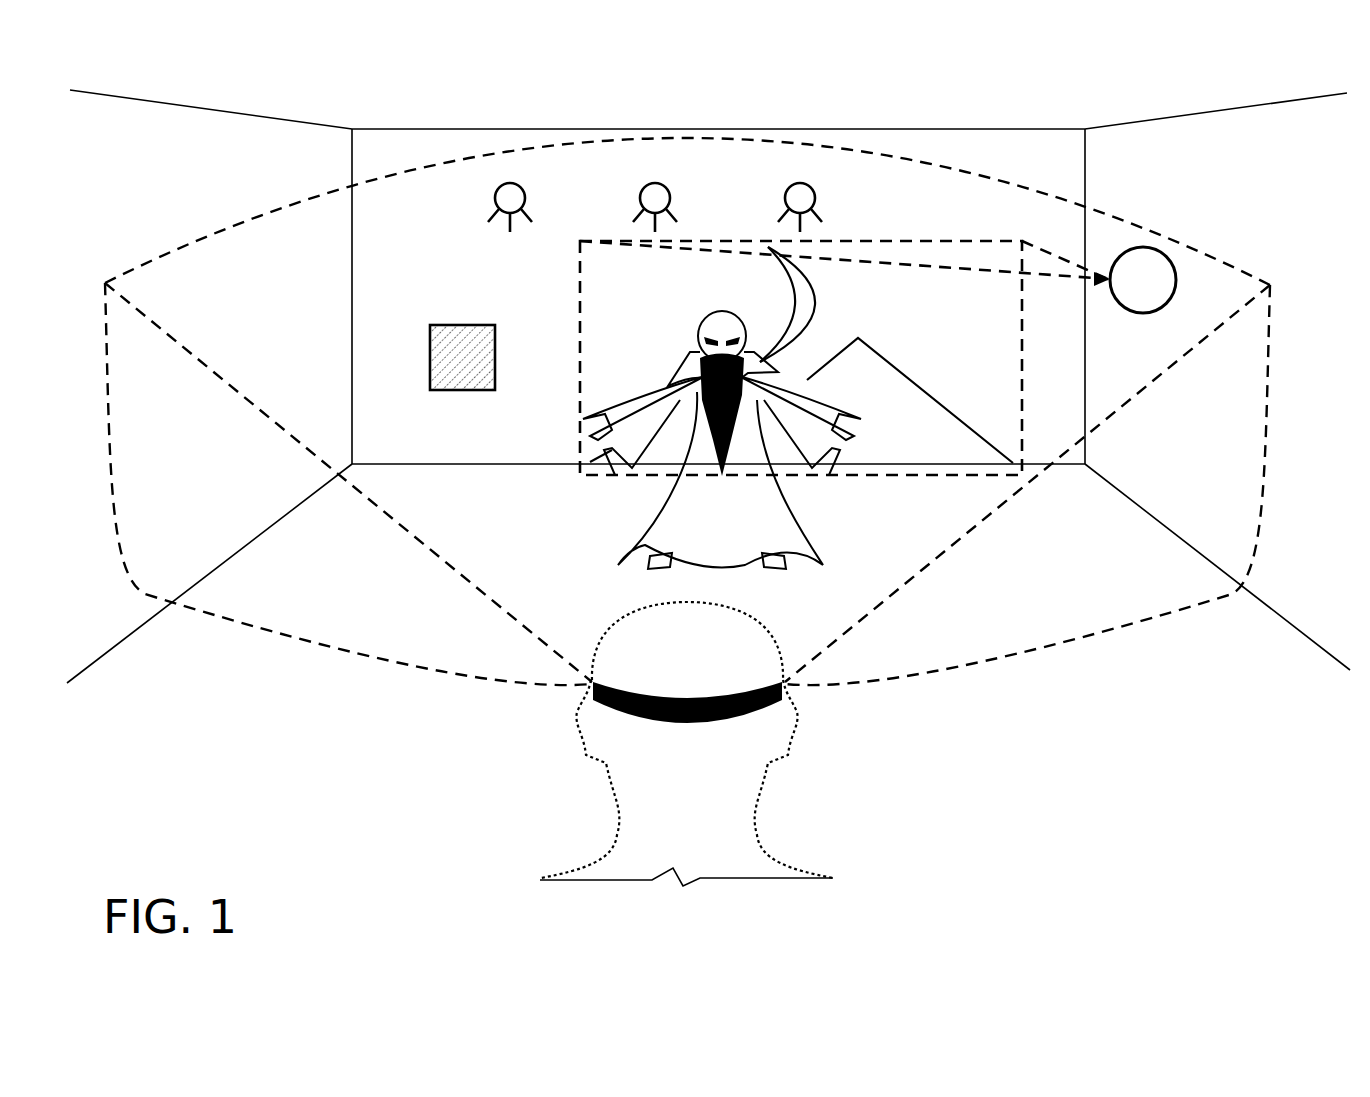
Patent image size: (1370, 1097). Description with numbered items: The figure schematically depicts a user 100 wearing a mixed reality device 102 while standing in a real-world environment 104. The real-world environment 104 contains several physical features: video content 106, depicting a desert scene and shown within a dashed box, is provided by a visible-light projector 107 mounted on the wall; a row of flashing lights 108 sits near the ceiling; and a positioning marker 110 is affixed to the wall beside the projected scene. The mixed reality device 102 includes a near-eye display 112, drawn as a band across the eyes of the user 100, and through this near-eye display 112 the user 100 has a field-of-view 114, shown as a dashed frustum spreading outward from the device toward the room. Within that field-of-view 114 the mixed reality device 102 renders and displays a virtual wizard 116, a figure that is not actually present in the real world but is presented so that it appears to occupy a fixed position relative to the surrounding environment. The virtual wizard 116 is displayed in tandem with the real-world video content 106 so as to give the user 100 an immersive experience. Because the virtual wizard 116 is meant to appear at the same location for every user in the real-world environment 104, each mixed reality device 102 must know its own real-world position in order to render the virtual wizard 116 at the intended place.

The user 100 is at (708, 659).
The mixed reality device 102 is at (784, 718).
The real-world environment 104 is at (228, 150).
The video content 106 is at (904, 241).
The visible-light projector 107 is at (1143, 313).
The flashing lights 108 is at (512, 184).
The positioning marker 110 is at (442, 325).
The near-eye display 112 is at (592, 692).
The field-of-view 114 is at (192, 238).
The virtual wizard 116 is at (700, 338).